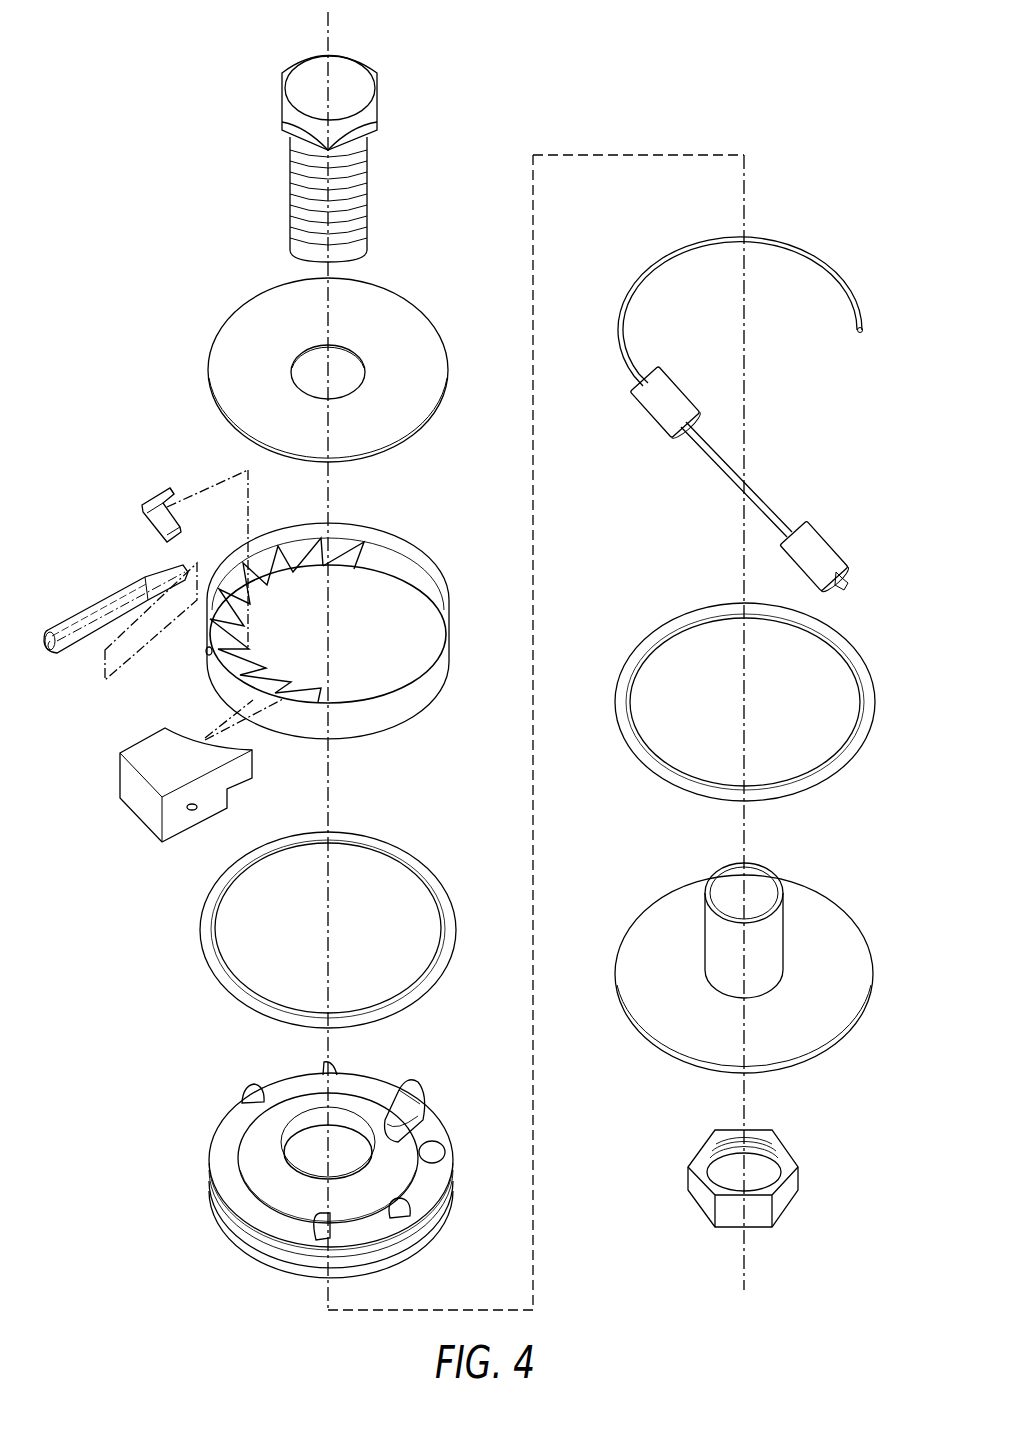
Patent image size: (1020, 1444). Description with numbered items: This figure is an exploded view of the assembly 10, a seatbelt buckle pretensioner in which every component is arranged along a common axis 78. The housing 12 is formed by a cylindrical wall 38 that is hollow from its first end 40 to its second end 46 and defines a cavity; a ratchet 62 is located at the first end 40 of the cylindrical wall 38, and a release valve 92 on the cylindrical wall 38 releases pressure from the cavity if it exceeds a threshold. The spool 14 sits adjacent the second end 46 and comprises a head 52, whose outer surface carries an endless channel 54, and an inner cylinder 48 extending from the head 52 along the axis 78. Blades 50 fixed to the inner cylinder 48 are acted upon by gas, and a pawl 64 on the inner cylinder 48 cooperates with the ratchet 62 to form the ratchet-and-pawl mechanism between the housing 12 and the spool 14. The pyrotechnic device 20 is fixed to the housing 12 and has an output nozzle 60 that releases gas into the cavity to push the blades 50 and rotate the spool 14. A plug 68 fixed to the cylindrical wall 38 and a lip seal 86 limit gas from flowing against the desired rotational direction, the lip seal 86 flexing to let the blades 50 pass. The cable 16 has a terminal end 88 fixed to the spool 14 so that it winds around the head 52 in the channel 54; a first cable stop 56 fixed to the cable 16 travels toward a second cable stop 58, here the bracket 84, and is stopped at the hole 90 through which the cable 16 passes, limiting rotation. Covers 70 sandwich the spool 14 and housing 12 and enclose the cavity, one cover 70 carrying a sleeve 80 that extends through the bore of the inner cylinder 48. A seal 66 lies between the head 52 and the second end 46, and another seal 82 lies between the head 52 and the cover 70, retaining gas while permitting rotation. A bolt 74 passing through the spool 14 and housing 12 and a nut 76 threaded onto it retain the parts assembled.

The assembly 10 is at (860, 80).
The housing 12 is at (332, 628).
The spool 14 is at (351, 1166).
The cable 16 is at (768, 411).
The pyrotechnic device 20 is at (115, 600).
The cylindrical wall 38 is at (420, 693).
The first end 40 is at (311, 588).
The second end 46 is at (382, 727).
The inner cylinder 48 is at (303, 1088).
The blade 50 is at (248, 1090).
The head 52 is at (268, 1262).
The channel 54 is at (358, 1264).
The first cable stop 56 is at (838, 540).
The second cable stop 58 is at (176, 853).
The output nozzle 60 is at (80, 642).
The ratchet 62 is at (354, 540).
The pawl 64 is at (422, 1090).
The seal 66 is at (425, 858).
The plug 68 is at (152, 525).
The cover 70 is at (250, 332).
The bolt 74 is at (282, 100).
The nut 76 is at (698, 1152).
The axis 78 is at (326, 30).
The sleeve 80 is at (765, 870).
The seal 82 is at (660, 625).
The bracket 84 is at (158, 805).
The lip seal 86 is at (168, 487).
The terminal end 88 is at (860, 335).
The hole 90 is at (186, 806).
The release valve 92 is at (207, 653).